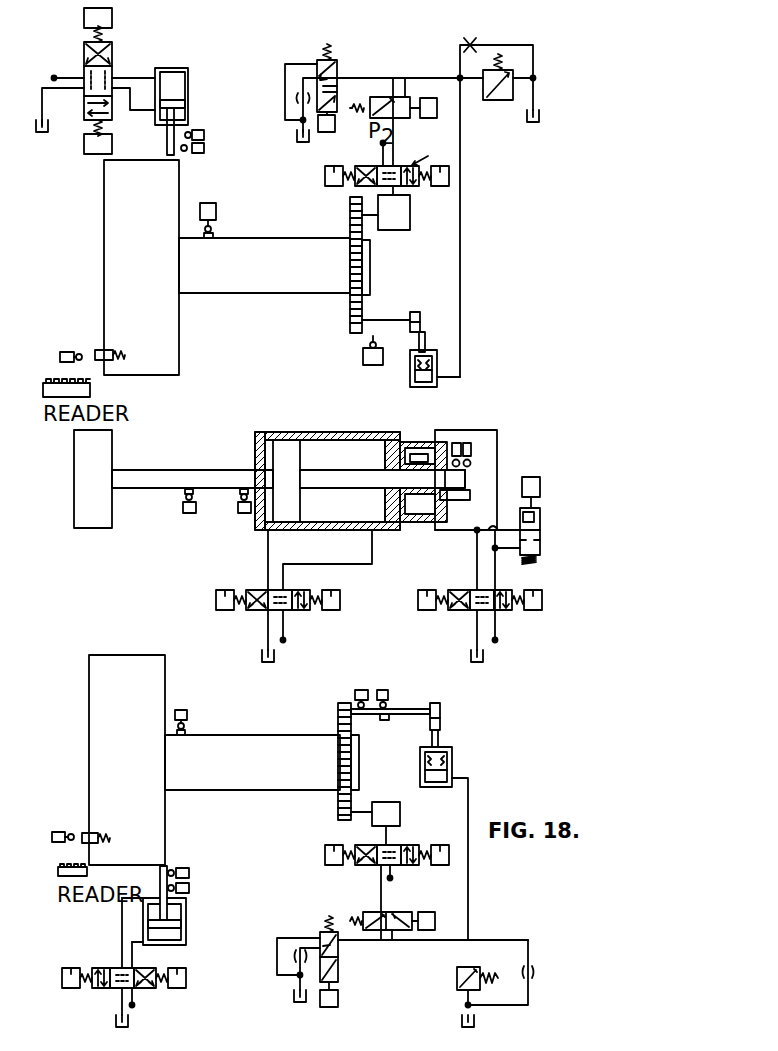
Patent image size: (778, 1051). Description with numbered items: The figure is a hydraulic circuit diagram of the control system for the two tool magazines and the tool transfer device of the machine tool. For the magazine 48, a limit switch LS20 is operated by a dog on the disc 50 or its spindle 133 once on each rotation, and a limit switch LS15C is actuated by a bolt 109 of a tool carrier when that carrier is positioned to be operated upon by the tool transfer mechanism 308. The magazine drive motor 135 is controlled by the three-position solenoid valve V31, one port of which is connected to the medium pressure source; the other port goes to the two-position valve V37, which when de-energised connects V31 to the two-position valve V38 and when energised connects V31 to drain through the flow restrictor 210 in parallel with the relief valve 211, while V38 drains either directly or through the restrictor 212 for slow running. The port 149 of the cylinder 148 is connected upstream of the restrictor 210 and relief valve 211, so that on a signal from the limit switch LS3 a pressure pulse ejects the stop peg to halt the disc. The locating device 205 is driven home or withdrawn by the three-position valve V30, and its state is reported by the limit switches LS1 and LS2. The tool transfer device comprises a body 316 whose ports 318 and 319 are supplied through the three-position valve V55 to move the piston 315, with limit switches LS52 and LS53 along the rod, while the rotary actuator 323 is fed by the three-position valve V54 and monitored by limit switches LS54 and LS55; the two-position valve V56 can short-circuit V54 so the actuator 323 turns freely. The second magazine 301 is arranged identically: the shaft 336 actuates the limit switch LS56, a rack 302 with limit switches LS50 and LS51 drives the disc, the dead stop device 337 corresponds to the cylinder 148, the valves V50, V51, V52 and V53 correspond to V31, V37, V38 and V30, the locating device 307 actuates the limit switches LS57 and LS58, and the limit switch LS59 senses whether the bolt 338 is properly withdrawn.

The three-position solenoid valve V30 is at (110, 57).
The locating device 205 is at (180, 107).
The limit switch LS1 is at (204, 135).
The limit switch LS2 is at (204, 148).
The restrictor 212 is at (297, 102).
The two-position solenoid valve V38 is at (338, 66).
The two-position solenoid valve V37 is at (384, 177).
The three-position solenoid actuated valve V31 is at (441, 155).
The flow restrictor 210 is at (475, 37).
The relief valve 211 is at (490, 101).
The magazine 48 is at (99, 296).
The disc 50 is at (168, 318).
The limit switch LS20 is at (216, 211).
The spindle 133 is at (275, 283).
The bolt 109 is at (110, 350).
The limit switch LS15C is at (63, 352).
The magazine drive motor 135 is at (395, 222).
The port 149 is at (437, 382).
The cylinder 148 is at (404, 373).
The limit switch LS3 is at (363, 360).
The tool transfer mechanism 308 is at (108, 541).
The body 316 is at (350, 433).
The piston 315 is at (288, 452).
The rotary actuator 323 is at (414, 531).
The limit switch LS54 is at (462, 425).
The limit switch LS55 is at (470, 452).
The limit switch LS52 is at (189, 513).
The limit switch LS53 is at (246, 514).
The port 319 is at (271, 545).
The port 318 is at (370, 543).
The three-position solenoid actuated valve V55 is at (312, 619).
The three-position solenoid actuated valve V54 is at (450, 619).
The two-position solenoid actuated valve V56 is at (532, 470).
The second magazine 301 is at (85, 772).
The shaft 336 is at (270, 783).
The limit switch LS56 is at (188, 712).
The rack 302 is at (415, 718).
The dead stop device 337 is at (460, 754).
The limit switch LS50 is at (356, 692).
The limit switch LS51 is at (384, 690).
The valve V50 is at (370, 867).
The valve V51 is at (402, 913).
The valve V52 is at (338, 970).
The bolt 338 is at (87, 833).
The limit switch LS59 is at (56, 844).
The locating device 307 is at (196, 910).
The limit switch LS58 is at (190, 870).
The limit switch LS57 is at (190, 889).
The valve V53 is at (150, 988).